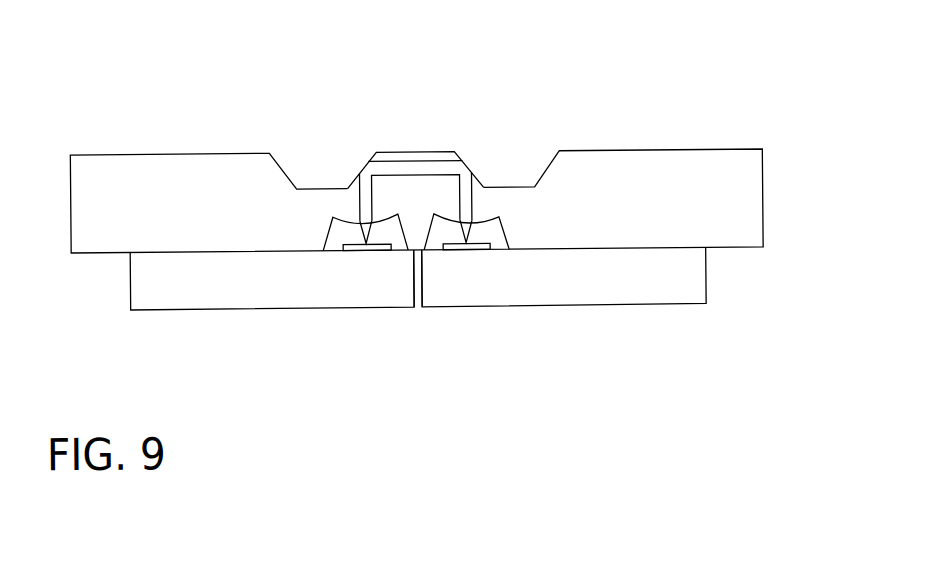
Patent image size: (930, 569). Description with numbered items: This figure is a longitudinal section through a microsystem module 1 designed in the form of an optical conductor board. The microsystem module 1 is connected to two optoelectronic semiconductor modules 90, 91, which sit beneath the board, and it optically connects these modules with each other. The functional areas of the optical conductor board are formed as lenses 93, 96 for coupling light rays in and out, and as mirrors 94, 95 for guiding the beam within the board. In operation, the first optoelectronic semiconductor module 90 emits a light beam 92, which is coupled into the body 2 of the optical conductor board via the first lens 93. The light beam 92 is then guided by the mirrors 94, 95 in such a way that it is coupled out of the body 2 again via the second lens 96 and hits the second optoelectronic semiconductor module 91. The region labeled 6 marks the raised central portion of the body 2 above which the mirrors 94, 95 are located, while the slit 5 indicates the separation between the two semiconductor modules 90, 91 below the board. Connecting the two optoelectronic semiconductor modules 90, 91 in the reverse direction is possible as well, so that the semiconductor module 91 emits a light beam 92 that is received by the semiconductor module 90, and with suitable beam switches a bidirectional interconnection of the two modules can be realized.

The microsystem module 1 is at (737, 118).
The body 2 is at (133, 178).
The slit between external terminals 5 is at (432, 265).
The semiconductor chip mounting portion 6 is at (382, 137).
The first optoelectronic semiconductor module 90 is at (156, 290).
The second optoelectronic semiconductor module 91 is at (646, 289).
The light beam 92 is at (392, 167).
The first lens 93 is at (340, 216).
The mirror 94 is at (362, 172).
The mirror 95 is at (468, 168).
The second lens 96 is at (493, 216).